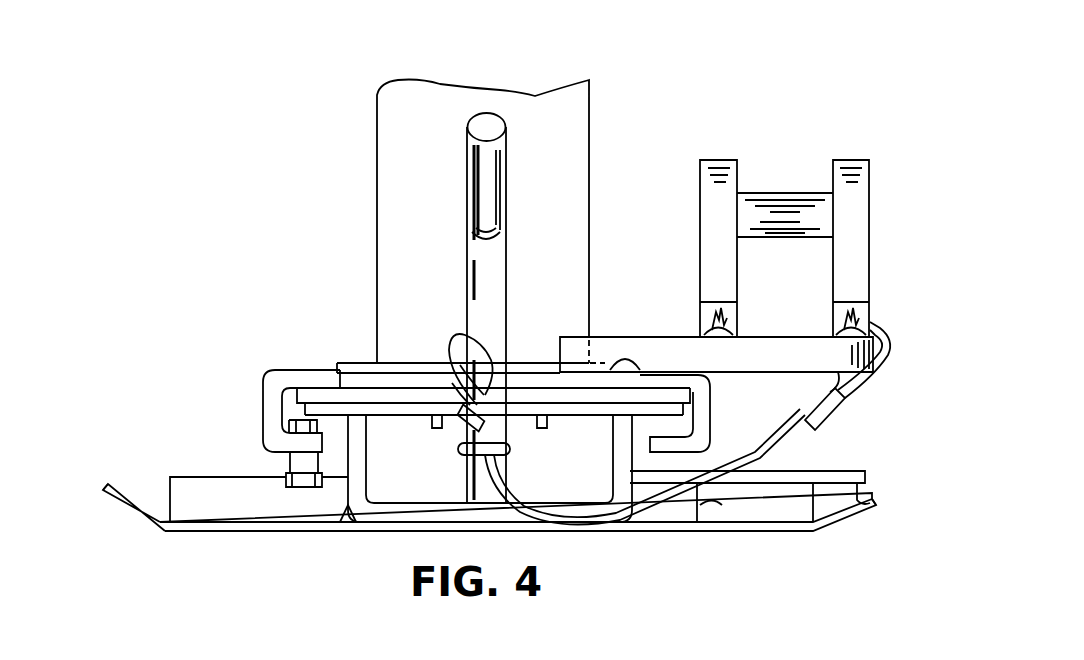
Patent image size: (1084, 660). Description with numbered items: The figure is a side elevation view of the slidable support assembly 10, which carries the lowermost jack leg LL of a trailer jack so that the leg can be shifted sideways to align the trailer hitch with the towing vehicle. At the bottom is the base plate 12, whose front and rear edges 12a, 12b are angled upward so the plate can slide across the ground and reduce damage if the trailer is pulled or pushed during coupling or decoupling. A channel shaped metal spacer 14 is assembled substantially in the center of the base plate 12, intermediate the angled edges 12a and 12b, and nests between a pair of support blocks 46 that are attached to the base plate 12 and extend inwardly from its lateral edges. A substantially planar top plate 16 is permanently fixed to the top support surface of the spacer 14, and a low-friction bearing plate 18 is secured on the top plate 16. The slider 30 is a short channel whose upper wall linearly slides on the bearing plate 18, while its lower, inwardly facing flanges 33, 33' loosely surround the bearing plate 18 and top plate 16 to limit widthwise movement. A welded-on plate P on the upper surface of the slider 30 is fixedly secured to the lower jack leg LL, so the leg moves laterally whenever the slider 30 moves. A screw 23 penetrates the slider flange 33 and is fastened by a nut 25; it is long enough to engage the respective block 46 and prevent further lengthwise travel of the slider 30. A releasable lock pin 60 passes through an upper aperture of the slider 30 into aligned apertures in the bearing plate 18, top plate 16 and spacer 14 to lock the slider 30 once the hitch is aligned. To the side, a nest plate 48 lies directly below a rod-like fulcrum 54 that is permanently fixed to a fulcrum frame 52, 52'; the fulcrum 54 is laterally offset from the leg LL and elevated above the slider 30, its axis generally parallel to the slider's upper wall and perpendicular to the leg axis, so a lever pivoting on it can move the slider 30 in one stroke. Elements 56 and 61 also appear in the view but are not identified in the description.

The slidable support assembly 10 is at (312, 325).
The base plate 12 is at (344, 540).
The upwardly angled front edge 12a is at (112, 492).
The upwardly angled rear edge 12b is at (850, 505).
The spacer 14 is at (399, 486).
The top plate 16 is at (407, 417).
The low-friction bearing plate 18 is at (301, 396).
The screw 23 is at (328, 396).
The nut 25 is at (296, 486).
The slider 30 is at (245, 397).
The slider flange 33 is at (256, 457).
The slider flange 33' is at (675, 430).
The support block 46 is at (221, 476).
The nest plate 48 is at (838, 470).
The fulcrum frame 52 is at (704, 231).
The fulcrum frame 52' is at (836, 231).
The fulcrum 54 is at (800, 194).
The bar 56 is at (636, 342).
The releasable lock pin 60 is at (504, 180).
The cable lanyard 61 is at (514, 494).
The lower jack leg LL is at (394, 161).
The plate P is at (414, 378).